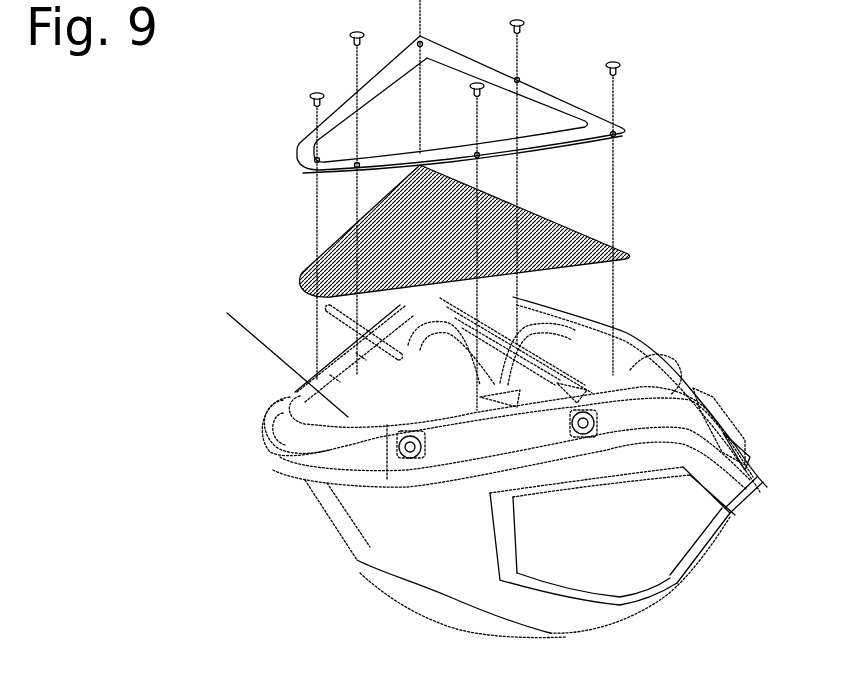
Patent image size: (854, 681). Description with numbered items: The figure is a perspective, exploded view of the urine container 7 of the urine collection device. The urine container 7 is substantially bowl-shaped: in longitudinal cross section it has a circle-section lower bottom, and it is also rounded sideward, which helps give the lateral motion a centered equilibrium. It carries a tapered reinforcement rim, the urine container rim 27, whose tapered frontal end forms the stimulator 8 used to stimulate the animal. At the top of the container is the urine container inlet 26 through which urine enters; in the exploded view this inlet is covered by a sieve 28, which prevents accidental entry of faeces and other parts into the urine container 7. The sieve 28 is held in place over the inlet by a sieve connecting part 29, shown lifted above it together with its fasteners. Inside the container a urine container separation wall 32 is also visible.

The urine container 7 is at (375, 527).
The stimulator 8 is at (288, 438).
The urine container inlet 26 is at (308, 252).
The urine container rim 27 is at (283, 408).
The sieve 28 is at (553, 237).
The sieve connecting part 29 is at (627, 133).
The urine container separation wall 32 is at (547, 323).